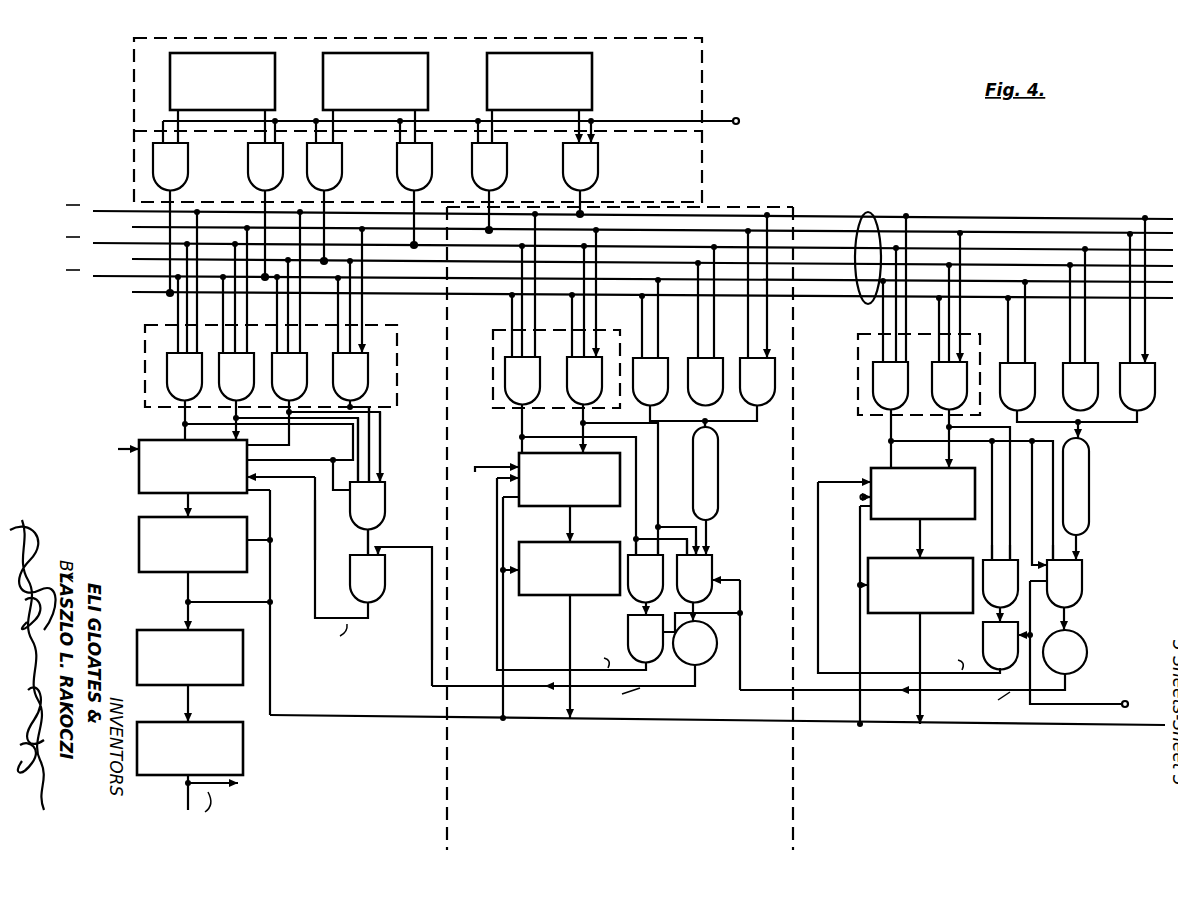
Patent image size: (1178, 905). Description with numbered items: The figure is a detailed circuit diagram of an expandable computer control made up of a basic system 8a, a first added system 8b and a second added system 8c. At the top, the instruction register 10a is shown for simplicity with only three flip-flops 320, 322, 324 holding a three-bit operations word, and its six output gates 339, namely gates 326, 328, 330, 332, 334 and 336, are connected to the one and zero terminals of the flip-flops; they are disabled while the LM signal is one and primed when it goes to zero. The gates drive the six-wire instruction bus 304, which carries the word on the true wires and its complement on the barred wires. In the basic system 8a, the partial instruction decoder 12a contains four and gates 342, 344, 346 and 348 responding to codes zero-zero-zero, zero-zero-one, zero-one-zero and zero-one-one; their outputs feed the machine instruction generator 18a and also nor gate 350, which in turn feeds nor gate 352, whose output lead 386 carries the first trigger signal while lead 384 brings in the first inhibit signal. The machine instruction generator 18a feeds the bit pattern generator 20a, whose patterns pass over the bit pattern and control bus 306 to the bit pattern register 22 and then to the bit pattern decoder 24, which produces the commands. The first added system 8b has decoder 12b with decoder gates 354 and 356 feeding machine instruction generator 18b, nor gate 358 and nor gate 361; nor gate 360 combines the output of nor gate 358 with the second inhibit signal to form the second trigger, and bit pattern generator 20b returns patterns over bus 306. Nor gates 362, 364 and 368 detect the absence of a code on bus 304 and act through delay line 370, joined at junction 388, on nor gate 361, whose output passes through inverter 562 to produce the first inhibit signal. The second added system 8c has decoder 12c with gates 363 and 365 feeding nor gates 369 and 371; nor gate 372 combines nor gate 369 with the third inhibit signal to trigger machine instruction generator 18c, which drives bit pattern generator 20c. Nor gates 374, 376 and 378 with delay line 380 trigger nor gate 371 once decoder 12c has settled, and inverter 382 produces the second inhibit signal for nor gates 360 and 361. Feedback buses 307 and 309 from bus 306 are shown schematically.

The instruction register 10a is at (703, 72).
The output gates 339 is at (703, 176).
The instruction bus 304 is at (868, 214).
The partial instruction decoder 12a is at (384, 330).
The partial instruction decoder 12b is at (493, 396).
The partial instruction decoder 12c is at (868, 334).
The flip-flop 320 is at (275, 92).
The flip-flop 322 is at (428, 88).
The flip-flop 324 is at (592, 94).
The output gate 326 is at (189, 166).
The output gate 328 is at (248, 171).
The output gate 330 is at (342, 167).
The output gate 332 is at (432, 170).
The output gate 334 is at (507, 170).
The output gate 336 is at (598, 170).
The and gate 342 is at (178, 406).
The and gate 344 is at (226, 406).
The and gate 346 is at (303, 360).
The and gate 348 is at (368, 383).
The nor gate 350 is at (386, 498).
The nor gate 352 is at (386, 578).
The decoder gate 354 is at (541, 385).
The decoder gate 356 is at (608, 355).
The nor gate 358 is at (628, 598).
The nor gate 360 is at (628, 634).
The nor gate 361 is at (713, 566).
The nor gate 362 is at (658, 354).
The nor gate 364 is at (716, 356).
The nor gate 368 is at (768, 400).
The decoder gate 363 is at (909, 390).
The decoder gate 365 is at (972, 360).
The nor gate 369 is at (985, 560).
The nor gate 371 is at (1082, 592).
The nor gate 372 is at (983, 640).
The delay line 370 is at (718, 480).
The delay line 380 is at (1089, 494).
The nor gate 374 is at (1040, 360).
The nor gate 376 is at (1102, 360).
The nor gate 378 is at (1156, 360).
The inverter 382 is at (1088, 652).
The inverter 562 is at (706, 670).
The lead 384 is at (432, 635).
The output lead 386 is at (315, 527).
The junction line 388 is at (708, 424).
The machine instruction generator 18a is at (139, 472).
The machine instruction generator 18b is at (584, 507).
The machine instruction generator 18c is at (874, 468).
The bit pattern generator 20a is at (136, 519).
The bit pattern generator 20b is at (546, 598).
The bit pattern generator 20c is at (904, 558).
The bit pattern register 22 is at (156, 625).
The bit pattern decoder 24 is at (244, 748).
The bit pattern and control bus 306 is at (786, 724).
The feedback bus 307 is at (497, 668).
The feedback bus 309 is at (855, 673).
The basic system 8a is at (271, 522).
The first added system 8b is at (613, 512).
The second added system 8c is at (959, 508).